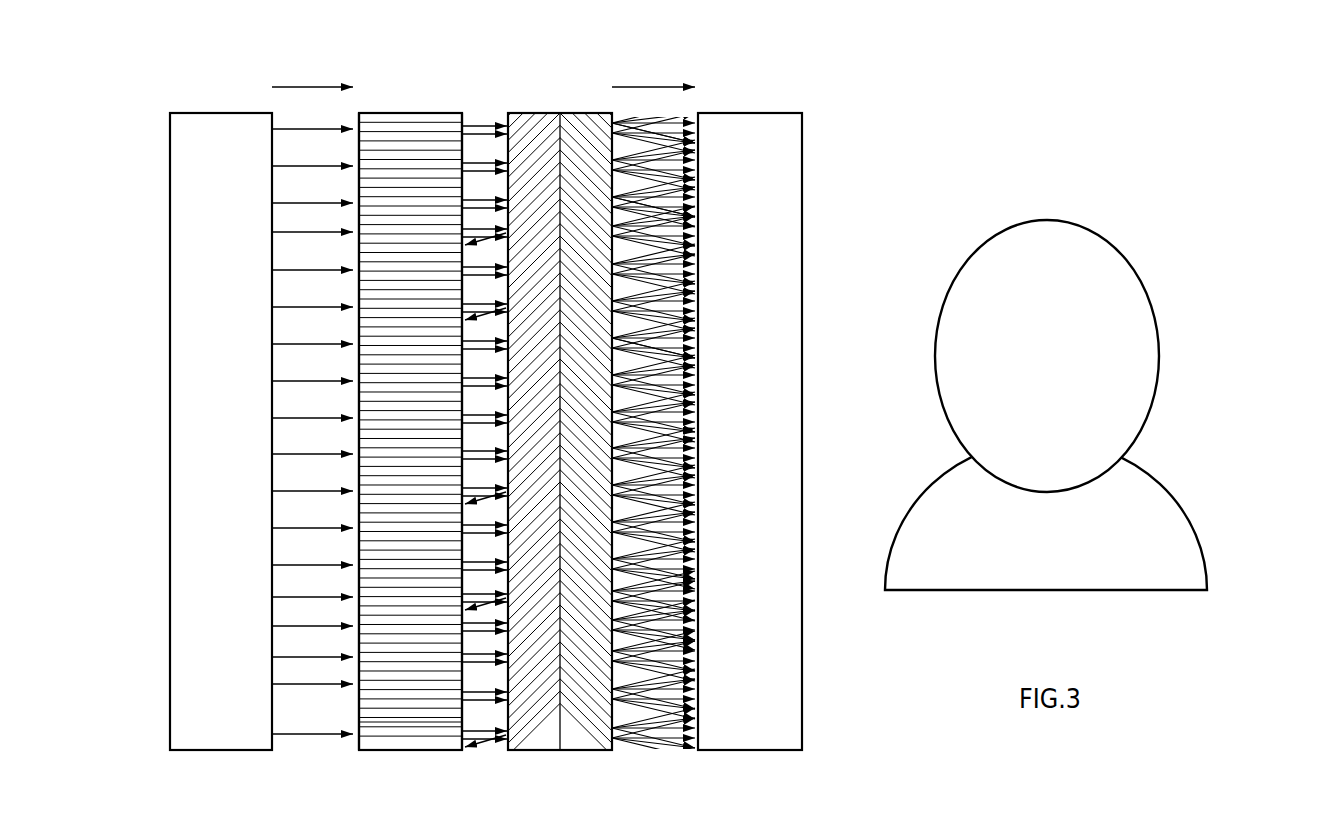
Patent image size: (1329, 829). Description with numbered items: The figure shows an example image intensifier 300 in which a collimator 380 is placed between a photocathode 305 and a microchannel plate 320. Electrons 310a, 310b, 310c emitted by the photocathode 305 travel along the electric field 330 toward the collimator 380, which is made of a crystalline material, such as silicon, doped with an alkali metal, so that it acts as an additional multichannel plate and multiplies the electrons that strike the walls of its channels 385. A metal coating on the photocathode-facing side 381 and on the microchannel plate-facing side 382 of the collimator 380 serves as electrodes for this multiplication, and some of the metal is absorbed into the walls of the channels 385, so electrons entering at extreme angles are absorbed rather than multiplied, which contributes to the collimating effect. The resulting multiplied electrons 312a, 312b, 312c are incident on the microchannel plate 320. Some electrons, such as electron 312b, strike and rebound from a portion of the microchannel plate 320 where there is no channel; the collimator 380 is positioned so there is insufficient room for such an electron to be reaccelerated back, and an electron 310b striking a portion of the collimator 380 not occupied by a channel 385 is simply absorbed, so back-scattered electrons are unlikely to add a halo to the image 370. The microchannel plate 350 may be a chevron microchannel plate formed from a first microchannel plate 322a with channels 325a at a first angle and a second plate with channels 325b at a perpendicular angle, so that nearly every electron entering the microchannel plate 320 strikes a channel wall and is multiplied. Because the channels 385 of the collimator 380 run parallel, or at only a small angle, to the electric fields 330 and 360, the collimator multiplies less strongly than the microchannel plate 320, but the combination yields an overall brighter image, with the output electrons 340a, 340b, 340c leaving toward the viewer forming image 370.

The image intensifier 300 is at (170, 67).
The photocathode 305 is at (169, 514).
The electron 310a is at (314, 166).
The electron 310b is at (315, 232).
The electron 310c is at (300, 382).
The multiplied electron 312a is at (488, 160).
The multiplied electron 312b is at (503, 233).
The multiplied electron 312c is at (473, 385).
The microchannel plate 320 is at (561, 751).
The first microchannel plate 322a is at (548, 752).
The channels 325a is at (537, 113).
The channels 325b is at (595, 113).
The electric field 330 is at (283, 86).
The diverging light ray 340a is at (653, 165).
The diverging light ray 340b is at (655, 230).
The diverging light ray 340c is at (658, 357).
The microchannel plate 350 is at (803, 727).
The electric field 360 is at (672, 86).
The image 370 is at (1250, 222).
The collimator 380 is at (410, 750).
The photocathode-facing side 381 is at (353, 664).
The microchannel plate-facing side 382 is at (462, 153).
The channels 385 is at (430, 723).